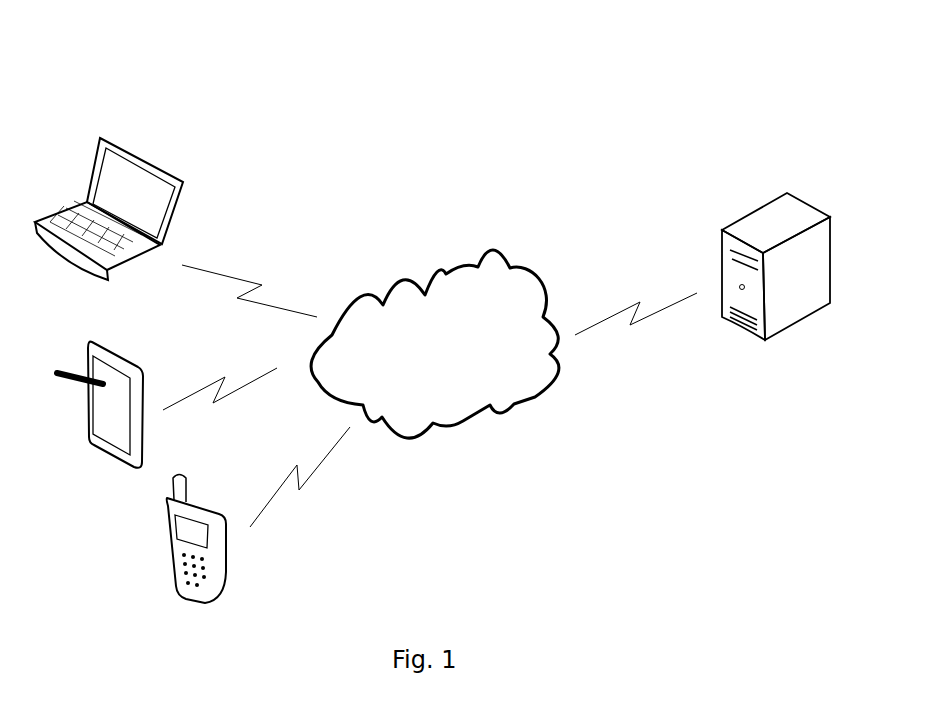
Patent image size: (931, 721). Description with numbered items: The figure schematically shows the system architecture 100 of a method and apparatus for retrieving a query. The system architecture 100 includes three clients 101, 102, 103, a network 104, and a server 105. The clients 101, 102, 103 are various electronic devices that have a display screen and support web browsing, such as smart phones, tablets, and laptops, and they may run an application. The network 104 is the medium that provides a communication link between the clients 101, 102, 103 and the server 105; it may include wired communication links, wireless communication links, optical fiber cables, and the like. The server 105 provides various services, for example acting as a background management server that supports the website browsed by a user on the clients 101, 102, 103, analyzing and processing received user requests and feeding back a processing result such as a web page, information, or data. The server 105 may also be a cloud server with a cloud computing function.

The system architecture 100 is at (134, 31).
The client 101 is at (177, 544).
The client 102 is at (97, 409).
The client 103 is at (109, 219).
The network 104 is at (435, 344).
The server 105 is at (776, 287).